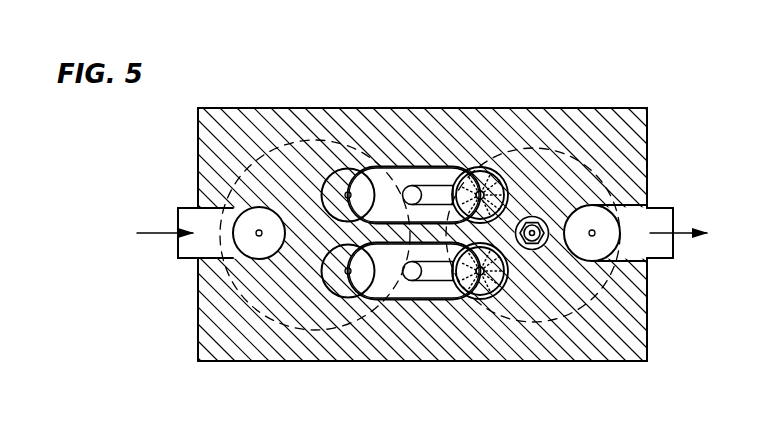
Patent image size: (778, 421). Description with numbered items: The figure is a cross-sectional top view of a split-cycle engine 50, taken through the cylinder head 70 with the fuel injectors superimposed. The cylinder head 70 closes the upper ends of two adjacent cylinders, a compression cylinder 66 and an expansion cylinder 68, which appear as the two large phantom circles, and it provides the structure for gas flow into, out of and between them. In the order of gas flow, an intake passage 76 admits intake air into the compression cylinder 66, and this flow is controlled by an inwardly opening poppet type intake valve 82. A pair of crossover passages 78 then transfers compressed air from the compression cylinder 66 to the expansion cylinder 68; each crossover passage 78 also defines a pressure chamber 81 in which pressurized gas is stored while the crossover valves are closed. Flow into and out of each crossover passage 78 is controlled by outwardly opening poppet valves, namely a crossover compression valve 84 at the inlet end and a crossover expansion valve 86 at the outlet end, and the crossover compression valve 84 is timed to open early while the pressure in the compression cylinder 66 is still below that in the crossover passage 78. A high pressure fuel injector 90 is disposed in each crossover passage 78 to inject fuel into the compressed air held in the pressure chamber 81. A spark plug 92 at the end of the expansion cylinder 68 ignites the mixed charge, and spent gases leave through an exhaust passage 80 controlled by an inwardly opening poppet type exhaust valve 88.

The split-cycle engine 50 is at (624, 80).
The compression cylinder 66 is at (198, 165).
The expansion cylinder 68 is at (648, 171).
The cylinder head 70 is at (650, 106).
The intake passage 76 is at (185, 249).
The crossover passage 78 is at (405, 172).
The exhaust passage 80 is at (660, 220).
The pressure chamber 81 is at (375, 177).
The intake valve 82 is at (253, 237).
The crossover compression valve 84 is at (343, 180).
The crossover expansion valve 86 is at (486, 178).
The exhaust valve 88 is at (592, 252).
The high pressure fuel injector 90 is at (432, 186).
The spark plug 92 is at (533, 218).